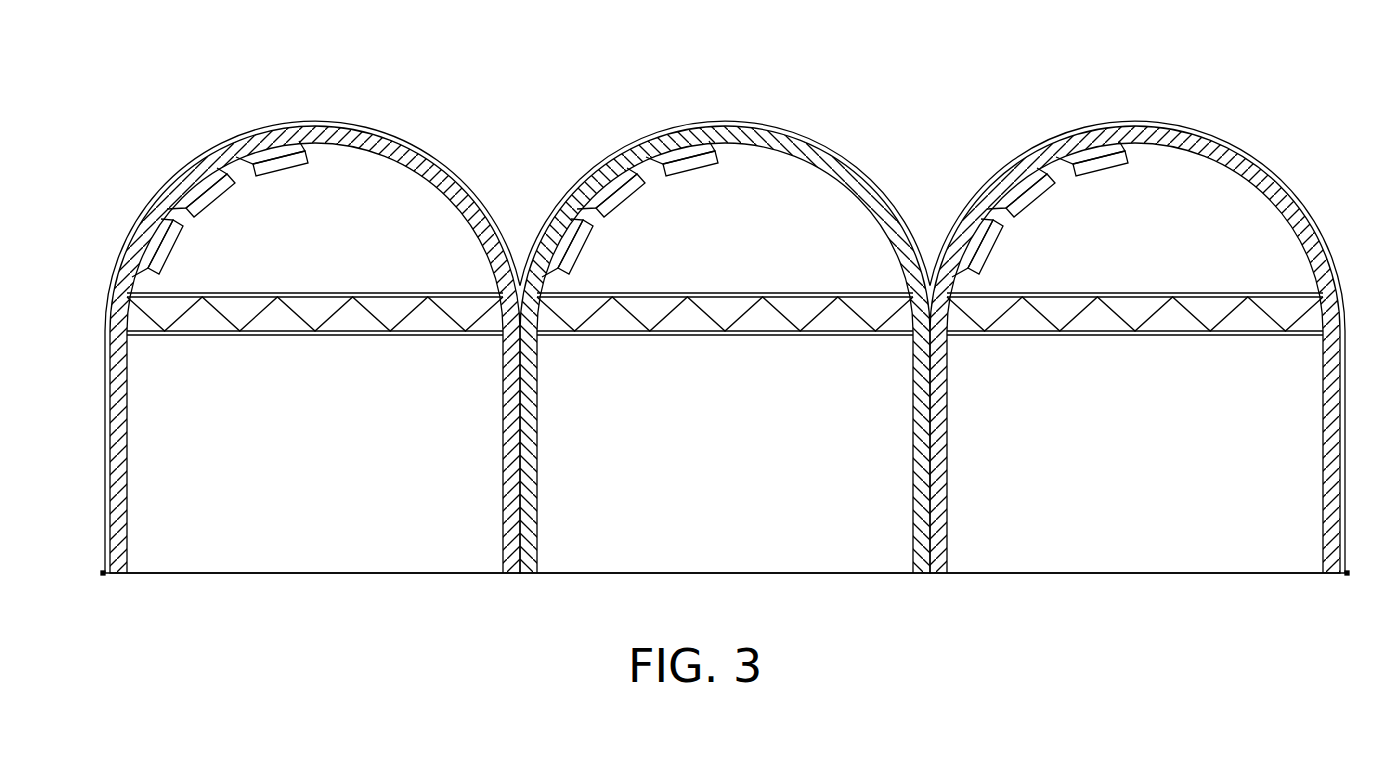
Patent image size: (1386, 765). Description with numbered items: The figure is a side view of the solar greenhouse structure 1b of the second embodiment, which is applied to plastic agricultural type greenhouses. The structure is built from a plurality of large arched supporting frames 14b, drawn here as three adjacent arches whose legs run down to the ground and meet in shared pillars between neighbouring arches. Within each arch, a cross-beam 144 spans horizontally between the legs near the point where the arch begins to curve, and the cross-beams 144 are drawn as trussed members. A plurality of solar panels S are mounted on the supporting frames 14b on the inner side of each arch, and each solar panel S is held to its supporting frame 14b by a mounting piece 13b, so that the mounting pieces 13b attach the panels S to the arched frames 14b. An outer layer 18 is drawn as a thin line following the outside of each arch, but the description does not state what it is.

The solar greenhouse structure 1b is at (1373, 83).
The mounting piece 13b is at (314, 153).
The arched supporting frame 14b is at (274, 164).
The outer covering layer 18 is at (421, 146).
The cross-beam 144 is at (281, 336).
The solar panel S is at (278, 168).